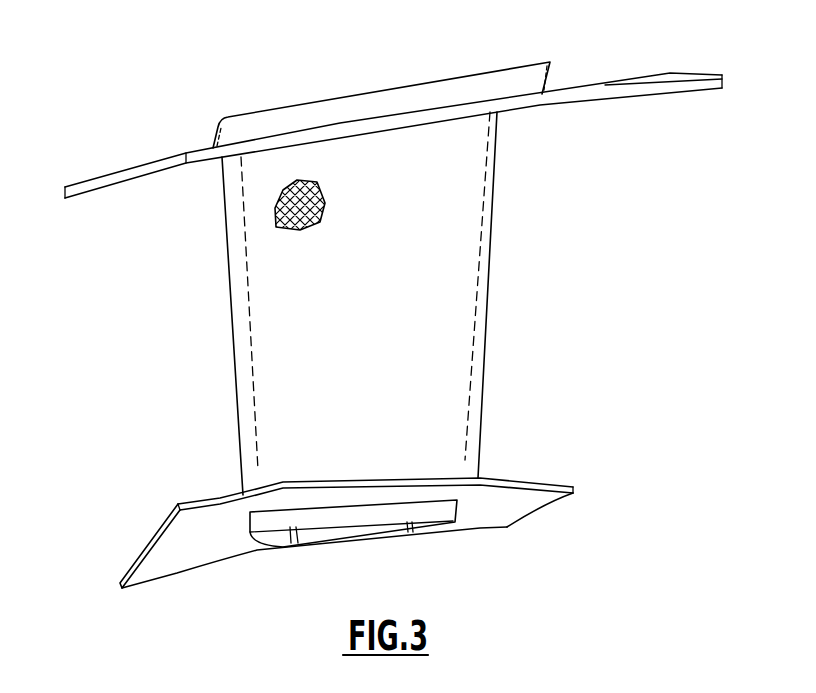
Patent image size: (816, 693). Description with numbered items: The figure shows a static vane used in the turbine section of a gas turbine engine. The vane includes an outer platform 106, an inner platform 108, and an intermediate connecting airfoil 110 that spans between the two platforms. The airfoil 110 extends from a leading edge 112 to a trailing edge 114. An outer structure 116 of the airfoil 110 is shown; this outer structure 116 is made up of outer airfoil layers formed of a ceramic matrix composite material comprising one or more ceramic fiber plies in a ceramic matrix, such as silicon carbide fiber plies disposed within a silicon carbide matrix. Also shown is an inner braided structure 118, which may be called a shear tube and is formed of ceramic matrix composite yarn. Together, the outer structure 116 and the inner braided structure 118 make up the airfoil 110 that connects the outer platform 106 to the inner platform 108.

The outer platform 106 is at (118, 174).
The inner platform 108 is at (558, 488).
The airfoil 110 is at (353, 303).
The leading edge 112 is at (233, 327).
The trailing edge 114 is at (487, 297).
The outer structure 116 is at (407, 152).
The inner braided structure 118 is at (308, 180).